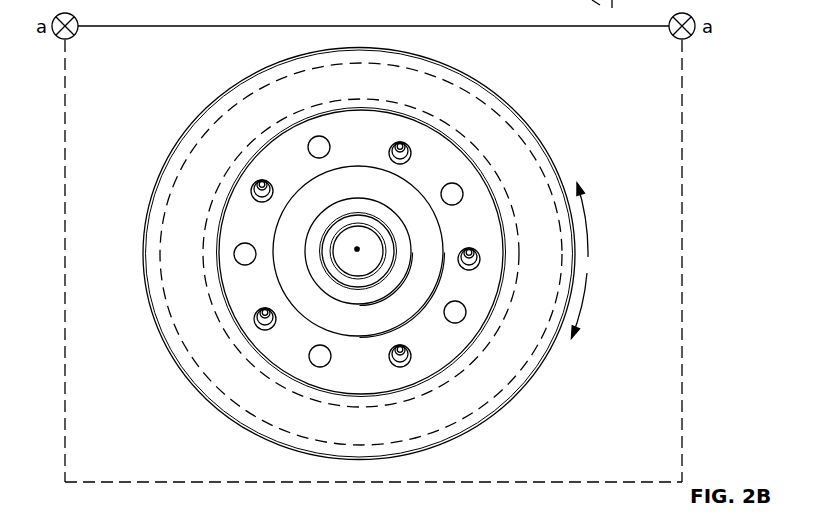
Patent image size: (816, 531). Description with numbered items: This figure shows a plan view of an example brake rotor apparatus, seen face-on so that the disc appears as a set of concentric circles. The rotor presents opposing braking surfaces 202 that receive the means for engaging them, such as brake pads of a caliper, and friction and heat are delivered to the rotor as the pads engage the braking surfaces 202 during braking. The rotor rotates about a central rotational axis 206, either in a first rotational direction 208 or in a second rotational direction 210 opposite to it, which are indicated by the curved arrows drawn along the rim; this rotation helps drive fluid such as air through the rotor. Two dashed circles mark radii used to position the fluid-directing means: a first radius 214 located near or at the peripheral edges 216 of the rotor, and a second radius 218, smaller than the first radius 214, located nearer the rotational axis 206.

The braking surfaces 202 is at (378, 436).
The rotational axis 206 is at (357, 248).
The first rotational direction 208 is at (588, 305).
The second rotational direction 210 is at (587, 222).
The first radius 214 is at (163, 220).
The peripheral edges 216 is at (538, 137).
The second radius 218 is at (202, 268).